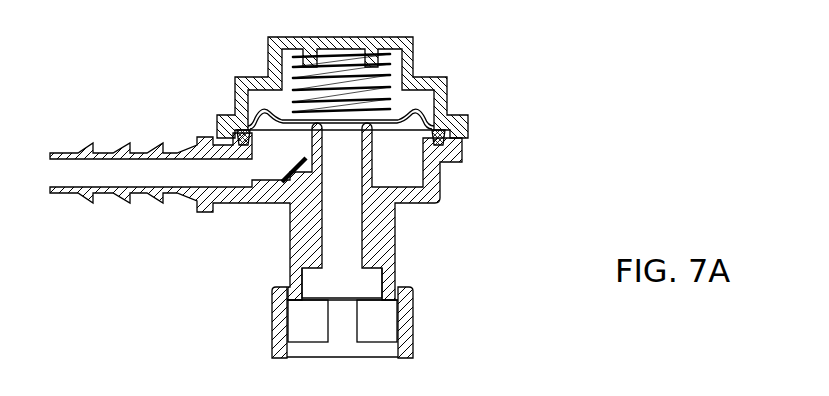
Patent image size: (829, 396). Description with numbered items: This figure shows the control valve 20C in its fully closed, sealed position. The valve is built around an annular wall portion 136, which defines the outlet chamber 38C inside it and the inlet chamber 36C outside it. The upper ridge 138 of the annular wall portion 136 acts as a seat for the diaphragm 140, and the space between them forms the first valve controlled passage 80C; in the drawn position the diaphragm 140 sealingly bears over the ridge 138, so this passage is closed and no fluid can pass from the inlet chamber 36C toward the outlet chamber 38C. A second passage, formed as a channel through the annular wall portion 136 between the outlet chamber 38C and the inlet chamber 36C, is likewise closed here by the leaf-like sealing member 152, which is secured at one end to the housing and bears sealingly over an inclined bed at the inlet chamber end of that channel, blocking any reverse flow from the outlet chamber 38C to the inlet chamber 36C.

The control valve 20C is at (530, 78).
The inlet chamber 36C is at (250, 163).
The outlet chamber 38C is at (342, 238).
The first valve controlled passage 80C is at (445, 137).
The annular wall portion 136 is at (367, 152).
The upper ridge 138 is at (268, 112).
The diaphragm 140 is at (398, 110).
The leaf-like sealing member 152 is at (290, 166).